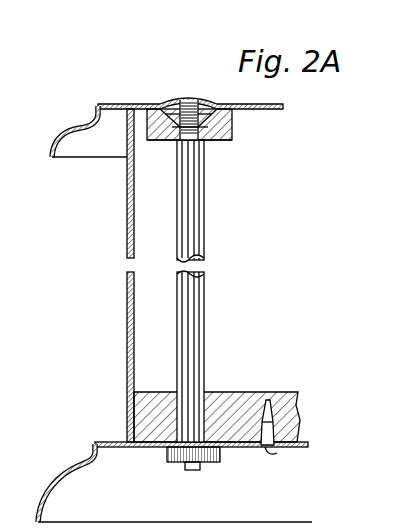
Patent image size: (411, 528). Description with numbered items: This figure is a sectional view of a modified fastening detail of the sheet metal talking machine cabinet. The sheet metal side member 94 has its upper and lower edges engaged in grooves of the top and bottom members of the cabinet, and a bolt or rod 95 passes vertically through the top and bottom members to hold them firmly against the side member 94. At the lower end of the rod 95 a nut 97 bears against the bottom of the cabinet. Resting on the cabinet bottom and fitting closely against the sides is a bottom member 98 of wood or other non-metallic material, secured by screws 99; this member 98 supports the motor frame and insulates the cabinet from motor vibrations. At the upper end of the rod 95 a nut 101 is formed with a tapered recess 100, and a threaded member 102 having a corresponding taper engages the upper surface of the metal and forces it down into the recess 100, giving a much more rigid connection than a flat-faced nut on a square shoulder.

The side member 94 is at (127, 351).
The bolt 95 is at (205, 215).
The nut 97 is at (219, 462).
The bottom member 98 is at (256, 392).
The screw 99 is at (275, 450).
The tapered recess 100 is at (232, 124).
The nut 101 is at (222, 141).
The threaded member 102 is at (172, 101).